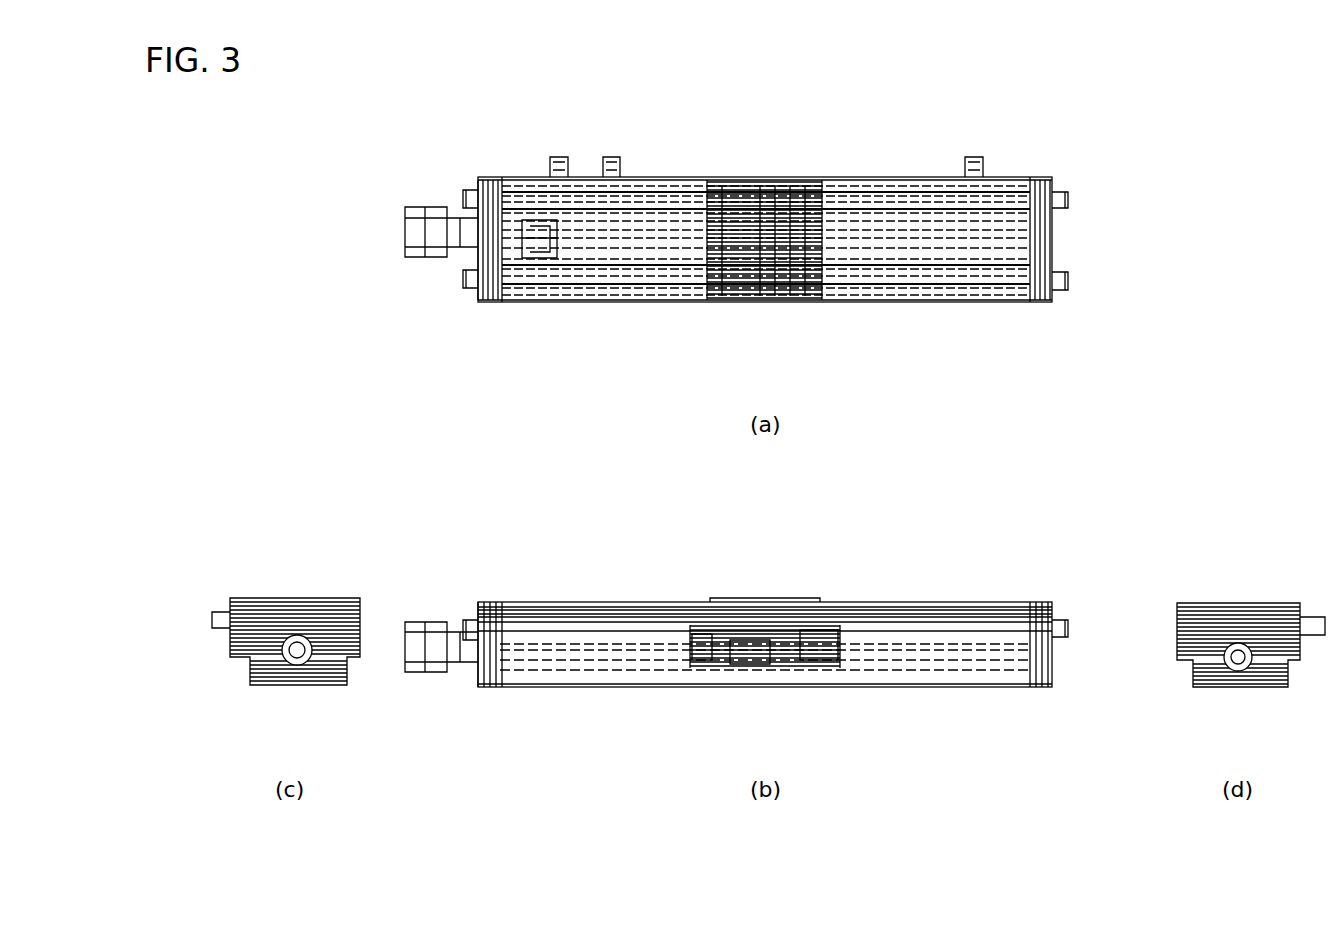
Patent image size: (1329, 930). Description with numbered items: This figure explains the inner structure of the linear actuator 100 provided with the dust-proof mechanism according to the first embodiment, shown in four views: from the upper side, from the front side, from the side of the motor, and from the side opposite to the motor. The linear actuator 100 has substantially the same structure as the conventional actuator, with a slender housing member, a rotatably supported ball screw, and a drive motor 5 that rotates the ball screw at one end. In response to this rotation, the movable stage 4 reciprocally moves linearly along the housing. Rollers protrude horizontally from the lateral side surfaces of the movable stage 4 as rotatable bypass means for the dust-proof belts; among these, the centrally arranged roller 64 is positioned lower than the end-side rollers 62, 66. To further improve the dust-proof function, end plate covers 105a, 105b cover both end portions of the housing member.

The linear actuator 100 is at (1025, 133).
The drive motor 5 is at (410, 260).
The end plate cover 105b is at (486, 303).
The end plate cover 105a is at (1030, 303).
The movable stage 4 is at (740, 303).
The roller 62 is at (832, 628).
The roller 64 is at (742, 654).
The roller 66 is at (700, 650).